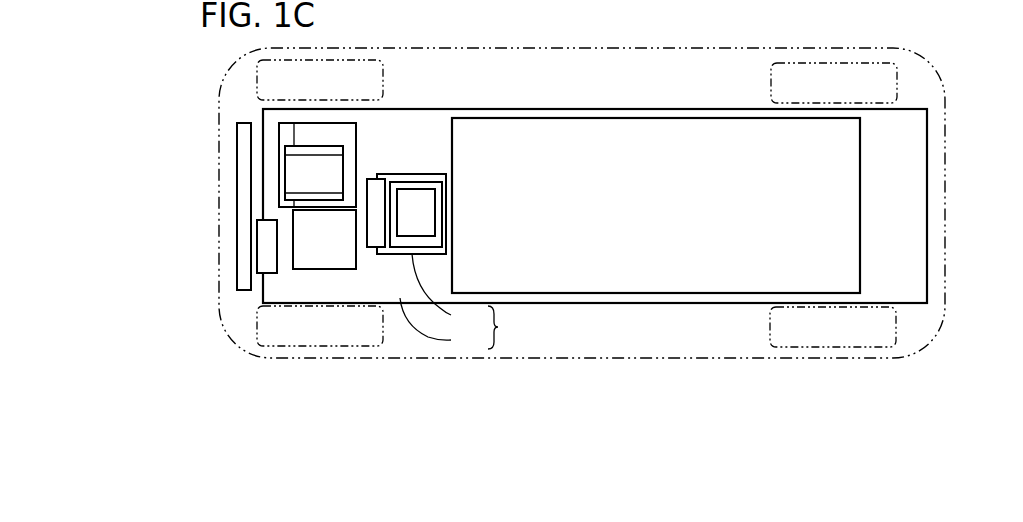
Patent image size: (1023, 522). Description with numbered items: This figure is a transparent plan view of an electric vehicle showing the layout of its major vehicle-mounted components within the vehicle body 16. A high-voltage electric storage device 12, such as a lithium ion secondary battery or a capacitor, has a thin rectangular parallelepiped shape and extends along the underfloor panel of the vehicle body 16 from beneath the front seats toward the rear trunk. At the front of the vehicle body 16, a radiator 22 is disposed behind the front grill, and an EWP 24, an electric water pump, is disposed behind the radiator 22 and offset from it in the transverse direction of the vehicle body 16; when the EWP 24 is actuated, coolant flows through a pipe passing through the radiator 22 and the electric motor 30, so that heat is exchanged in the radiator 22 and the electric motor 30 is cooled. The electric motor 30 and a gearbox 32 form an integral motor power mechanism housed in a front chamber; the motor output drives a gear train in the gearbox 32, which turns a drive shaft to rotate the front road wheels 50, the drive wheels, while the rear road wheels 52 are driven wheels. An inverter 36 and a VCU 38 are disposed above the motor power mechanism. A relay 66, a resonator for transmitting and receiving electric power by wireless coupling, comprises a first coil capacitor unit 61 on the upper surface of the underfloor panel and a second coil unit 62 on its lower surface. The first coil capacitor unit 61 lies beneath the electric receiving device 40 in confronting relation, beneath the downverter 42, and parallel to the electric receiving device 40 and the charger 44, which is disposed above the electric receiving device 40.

The electric storage device 12 is at (704, 130).
The vehicle body 16 is at (686, 47).
The radiator 22 is at (240, 155).
The EWP (Electric Water Pump) 24 is at (262, 244).
The electric motor 30 is at (316, 121).
The gearbox 32 is at (328, 258).
The inverter 36 is at (291, 195).
The VCU (Voltage Control Unit) 38 is at (302, 170).
The electric receiving device 40 is at (429, 255).
The downverter 42 is at (373, 178).
The charger 44 is at (413, 188).
The front road wheels 50 is at (383, 80).
The rear road wheels 52 is at (813, 76).
The first coil capacitor unit 61 is at (448, 292).
The second coil unit 62 is at (442, 326).
The relay (resonator) 66 is at (506, 327).